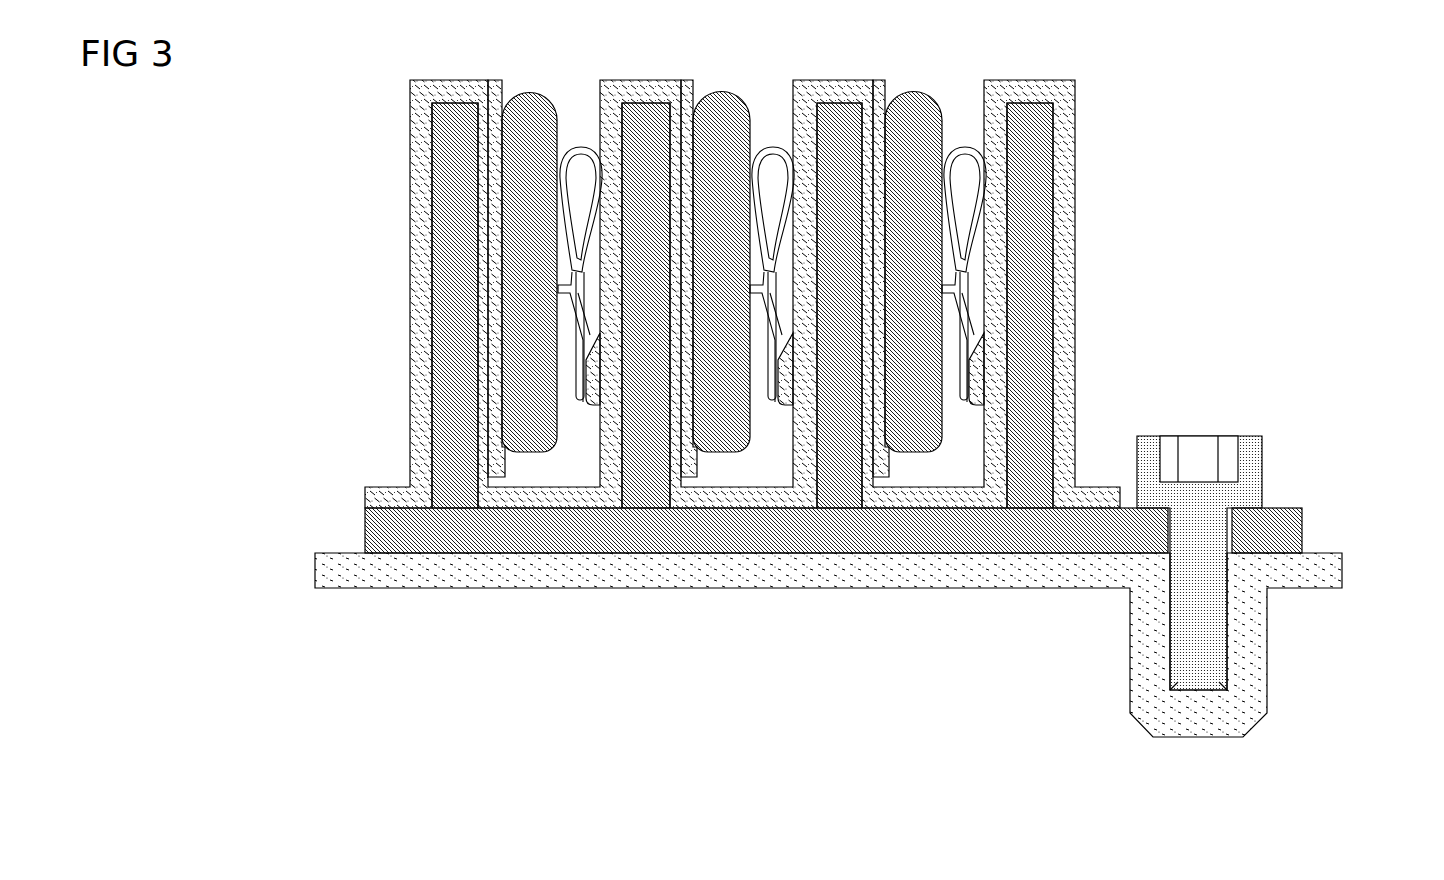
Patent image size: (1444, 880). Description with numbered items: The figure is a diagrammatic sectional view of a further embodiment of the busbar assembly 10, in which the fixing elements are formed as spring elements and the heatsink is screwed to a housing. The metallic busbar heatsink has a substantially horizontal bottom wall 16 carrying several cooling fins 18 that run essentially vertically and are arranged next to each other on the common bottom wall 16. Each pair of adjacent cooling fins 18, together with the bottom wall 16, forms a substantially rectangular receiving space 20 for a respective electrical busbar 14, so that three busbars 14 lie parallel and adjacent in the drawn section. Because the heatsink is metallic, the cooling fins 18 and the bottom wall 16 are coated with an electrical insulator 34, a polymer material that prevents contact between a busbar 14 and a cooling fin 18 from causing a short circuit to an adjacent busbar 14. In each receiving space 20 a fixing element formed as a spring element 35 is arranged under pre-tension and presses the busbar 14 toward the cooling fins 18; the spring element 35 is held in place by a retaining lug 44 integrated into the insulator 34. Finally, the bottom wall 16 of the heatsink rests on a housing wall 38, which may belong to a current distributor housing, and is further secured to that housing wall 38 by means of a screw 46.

The busbar assembly 10 is at (1214, 226).
The electrical busbar 14 is at (527, 118).
The bottom wall 16 is at (1281, 537).
The cooling fin 18 is at (460, 292).
The receiving space 20 is at (580, 110).
The electrical insulator 34 is at (412, 232).
The spring element 35 is at (575, 347).
The housing wall 38 is at (1335, 579).
The retaining lug 44 is at (600, 372).
The screw 46 is at (1250, 457).